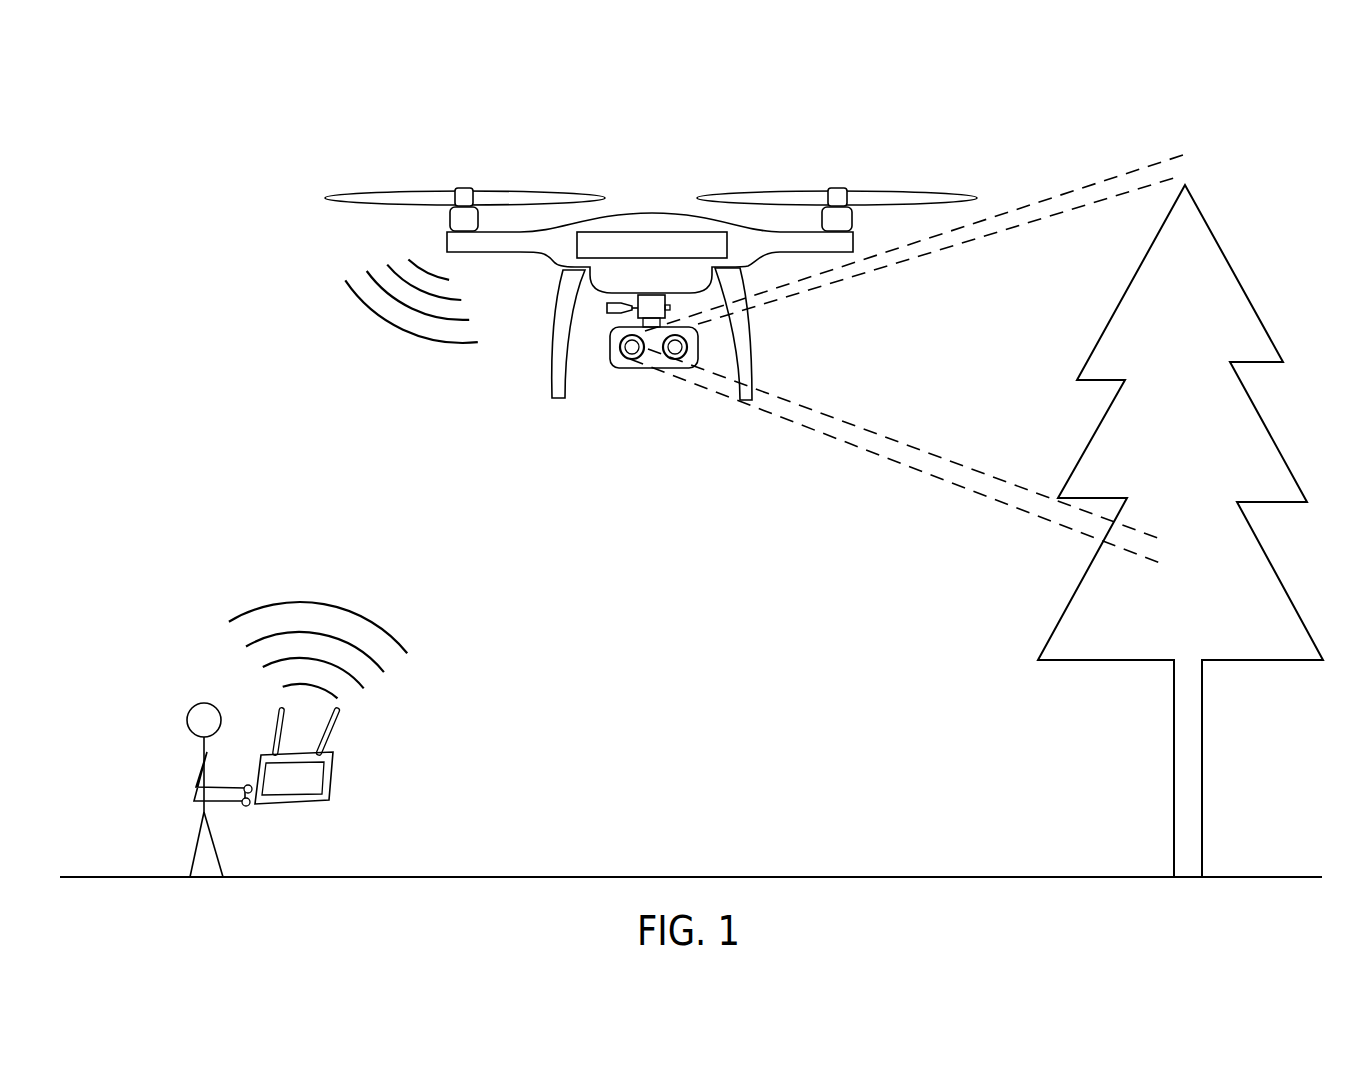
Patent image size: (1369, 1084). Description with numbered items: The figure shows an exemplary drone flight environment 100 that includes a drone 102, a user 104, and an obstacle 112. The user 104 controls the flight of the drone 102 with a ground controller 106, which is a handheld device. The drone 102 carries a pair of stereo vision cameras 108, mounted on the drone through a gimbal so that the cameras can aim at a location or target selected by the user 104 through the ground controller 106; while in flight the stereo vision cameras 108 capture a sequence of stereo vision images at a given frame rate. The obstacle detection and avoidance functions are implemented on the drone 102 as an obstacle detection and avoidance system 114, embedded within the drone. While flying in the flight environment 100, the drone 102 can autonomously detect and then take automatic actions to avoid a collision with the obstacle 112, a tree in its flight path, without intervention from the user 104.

The drone flight environment 100 is at (887, 75).
The drone 102 is at (447, 250).
The user 104 is at (197, 785).
The ground controller 106 is at (327, 782).
The stereo vision cameras 108 is at (622, 365).
The obstacle 112 is at (1180, 531).
The obstacle detection and avoidance system 114 is at (652, 245).